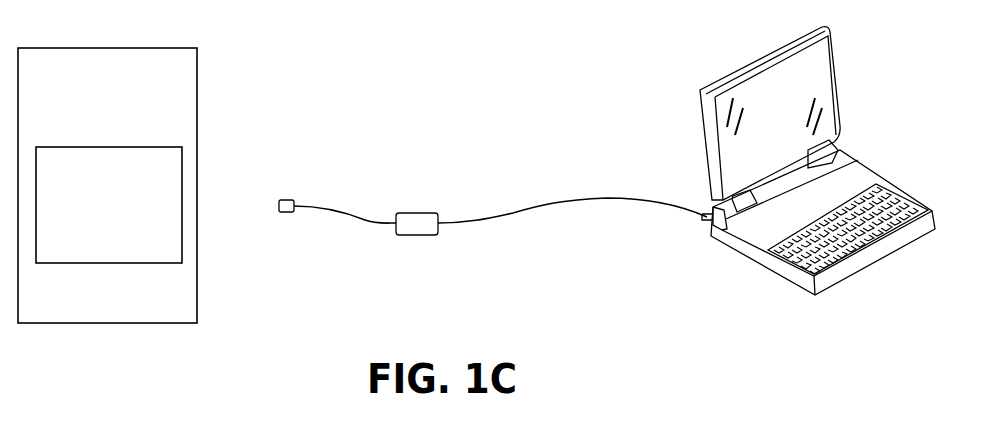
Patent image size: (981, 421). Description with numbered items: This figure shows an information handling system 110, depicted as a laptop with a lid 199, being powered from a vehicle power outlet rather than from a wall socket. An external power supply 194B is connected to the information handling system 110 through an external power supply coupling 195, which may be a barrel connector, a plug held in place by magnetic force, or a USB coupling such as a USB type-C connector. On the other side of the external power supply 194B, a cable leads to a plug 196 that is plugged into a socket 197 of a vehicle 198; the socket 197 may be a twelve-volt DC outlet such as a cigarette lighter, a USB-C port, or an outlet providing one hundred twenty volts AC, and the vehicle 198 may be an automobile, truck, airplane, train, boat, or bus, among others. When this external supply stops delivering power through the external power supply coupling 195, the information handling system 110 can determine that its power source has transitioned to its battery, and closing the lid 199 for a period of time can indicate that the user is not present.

The information handling system 110 is at (681, 87).
The lid 199 is at (836, 67).
The external power supply coupling 195 is at (703, 224).
The external power supply 194B is at (418, 213).
The plug 196 is at (286, 199).
The vehicle 198 is at (124, 108).
The socket 197 is at (124, 230).